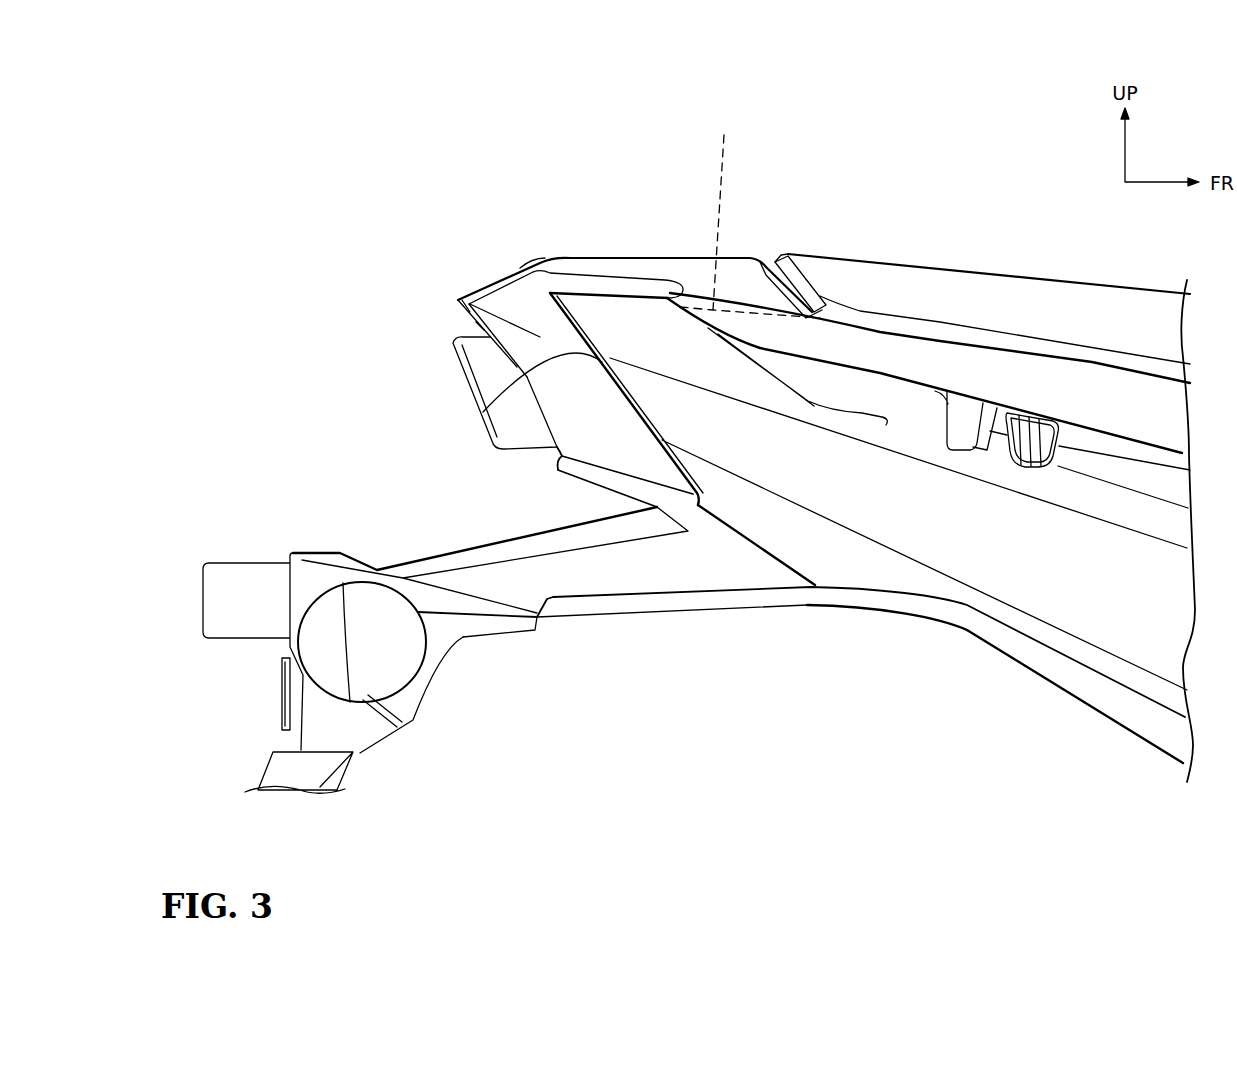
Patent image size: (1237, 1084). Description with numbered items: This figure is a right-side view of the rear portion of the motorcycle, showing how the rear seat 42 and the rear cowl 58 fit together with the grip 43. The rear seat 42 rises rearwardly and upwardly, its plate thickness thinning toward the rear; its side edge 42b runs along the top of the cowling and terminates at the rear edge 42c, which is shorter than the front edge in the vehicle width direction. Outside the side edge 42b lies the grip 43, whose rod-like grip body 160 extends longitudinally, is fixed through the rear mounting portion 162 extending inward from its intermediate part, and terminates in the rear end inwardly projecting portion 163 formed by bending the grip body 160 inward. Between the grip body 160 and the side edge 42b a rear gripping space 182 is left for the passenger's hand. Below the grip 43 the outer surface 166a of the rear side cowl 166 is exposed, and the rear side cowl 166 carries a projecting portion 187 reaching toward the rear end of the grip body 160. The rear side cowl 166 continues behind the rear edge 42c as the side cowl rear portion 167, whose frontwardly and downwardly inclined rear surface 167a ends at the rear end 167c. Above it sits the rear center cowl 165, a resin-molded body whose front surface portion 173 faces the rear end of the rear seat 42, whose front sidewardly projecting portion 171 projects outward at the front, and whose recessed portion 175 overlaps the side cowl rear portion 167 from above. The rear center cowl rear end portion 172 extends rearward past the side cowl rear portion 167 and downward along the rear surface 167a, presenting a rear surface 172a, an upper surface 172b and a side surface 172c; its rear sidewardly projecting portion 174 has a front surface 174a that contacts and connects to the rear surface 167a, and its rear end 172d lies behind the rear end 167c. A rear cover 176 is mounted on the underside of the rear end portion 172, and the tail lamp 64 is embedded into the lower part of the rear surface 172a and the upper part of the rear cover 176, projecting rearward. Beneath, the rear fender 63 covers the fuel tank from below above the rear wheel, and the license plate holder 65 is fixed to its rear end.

The rear seat 42 is at (1035, 276).
The side edge 42b is at (972, 333).
The rear edge 42c is at (779, 256).
The grip 43 is at (1091, 358).
The rear cowl 58 is at (688, 237).
The rear fender 63 is at (632, 612).
The tail lamp 64 is at (455, 345).
The license plate holder 65 is at (290, 770).
The grip body 160 is at (1128, 393).
The rear mounting portion 162 is at (985, 440).
The rear end inwardly projecting portion 163 is at (746, 259).
The rear center cowl 165 is at (648, 257).
The rear side cowl 166 is at (768, 567).
The outer surface 166a is at (880, 503).
The side cowl rear portion 167 is at (693, 365).
The rear surface 167a is at (575, 348).
The rear end 167c is at (532, 263).
The front sidewardly projecting portion 171 is at (750, 214).
The rear center cowl rear end portion 172 is at (507, 268).
The rear surface 172a is at (475, 320).
The upper surface 172b is at (490, 273).
The side surface 172c is at (478, 320).
The rear end 172d is at (470, 300).
The front surface portion 173 is at (774, 258).
The rear sidewardly projecting portion 174 is at (490, 283).
The front surface 174a is at (577, 293).
The recessed portion 175 is at (613, 283).
The rear cover 176 is at (575, 480).
The rear gripping space 182 is at (908, 396).
The projecting portion 187 is at (807, 402).